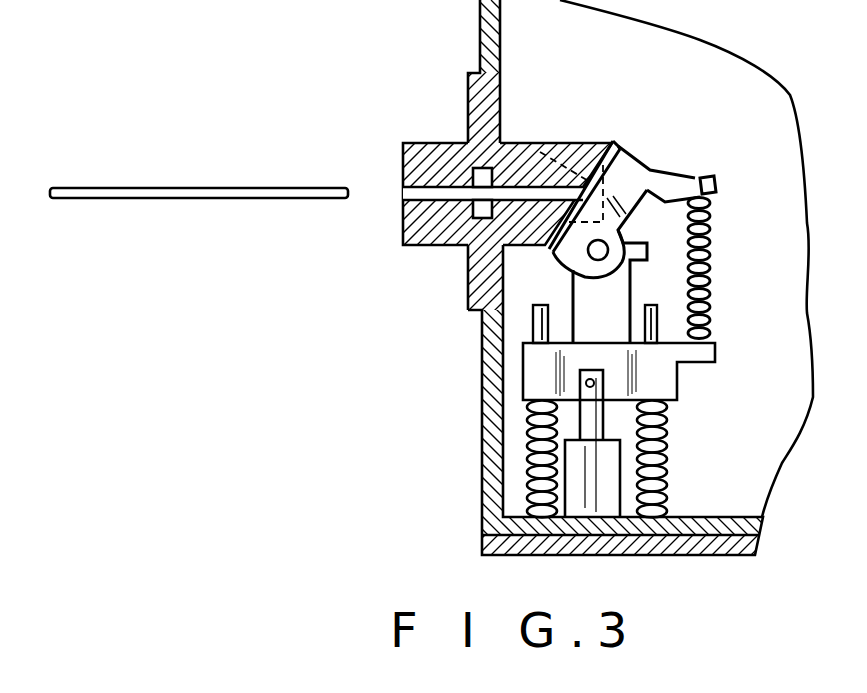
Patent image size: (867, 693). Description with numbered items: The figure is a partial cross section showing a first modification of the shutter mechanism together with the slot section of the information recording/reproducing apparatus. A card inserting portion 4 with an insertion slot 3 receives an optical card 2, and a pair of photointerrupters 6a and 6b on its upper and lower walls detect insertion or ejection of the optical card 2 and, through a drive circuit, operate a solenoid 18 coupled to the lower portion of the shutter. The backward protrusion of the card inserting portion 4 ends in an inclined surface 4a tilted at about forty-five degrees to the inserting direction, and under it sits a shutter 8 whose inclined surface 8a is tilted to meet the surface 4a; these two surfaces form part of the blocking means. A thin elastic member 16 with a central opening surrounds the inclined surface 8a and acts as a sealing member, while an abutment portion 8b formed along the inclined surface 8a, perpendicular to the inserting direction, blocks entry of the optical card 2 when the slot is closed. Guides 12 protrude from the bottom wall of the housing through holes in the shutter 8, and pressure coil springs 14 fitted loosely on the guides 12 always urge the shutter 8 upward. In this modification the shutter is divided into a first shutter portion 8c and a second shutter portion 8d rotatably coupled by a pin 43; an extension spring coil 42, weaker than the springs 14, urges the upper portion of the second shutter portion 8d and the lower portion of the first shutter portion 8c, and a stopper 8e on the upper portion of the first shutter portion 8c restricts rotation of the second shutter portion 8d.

The optical card 2 is at (192, 188).
The insertion slot 3 is at (368, 176).
The card inserting portion 4 is at (425, 248).
The inclined surface 4a is at (587, 180).
The photointerrupter 6a is at (473, 170).
The photointerrupter 6b is at (475, 211).
The shutter 8 is at (643, 249).
The inclined surface 8a is at (644, 172).
The abutment portion 8b is at (543, 153).
The first shutter portion 8c is at (660, 377).
The second shutter portion 8d is at (680, 174).
The stopper 8e is at (645, 235).
The guides 12 is at (645, 322).
The springs 14 is at (527, 462).
The elastic member 16 is at (617, 147).
The solenoid 18 is at (598, 505).
The coil 42 is at (713, 285).
The pin 43 is at (575, 262).